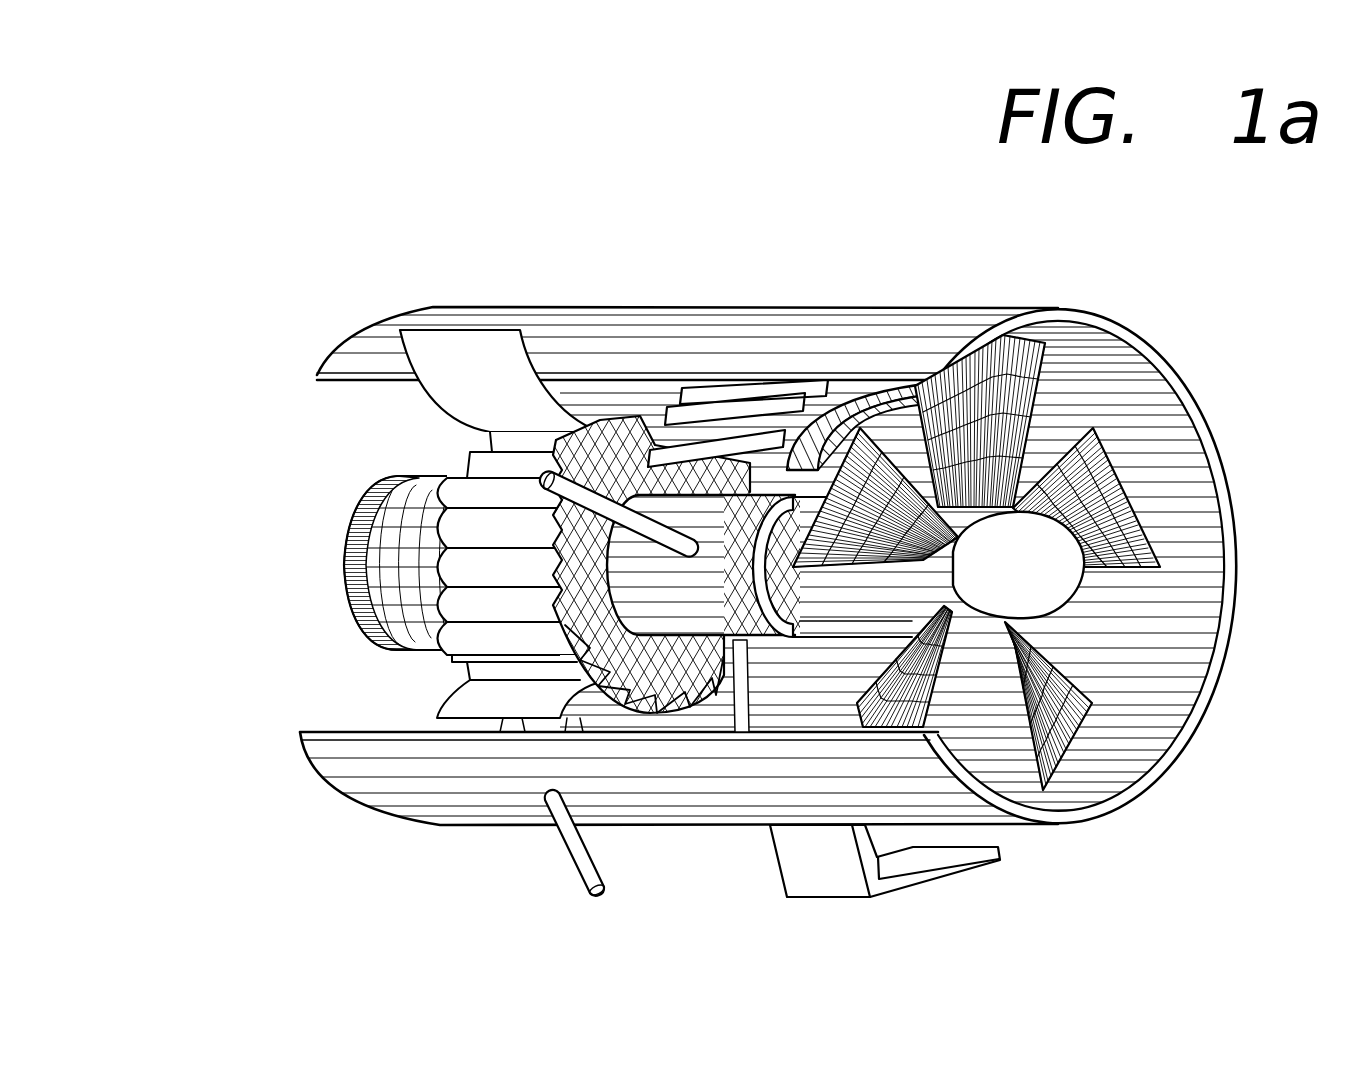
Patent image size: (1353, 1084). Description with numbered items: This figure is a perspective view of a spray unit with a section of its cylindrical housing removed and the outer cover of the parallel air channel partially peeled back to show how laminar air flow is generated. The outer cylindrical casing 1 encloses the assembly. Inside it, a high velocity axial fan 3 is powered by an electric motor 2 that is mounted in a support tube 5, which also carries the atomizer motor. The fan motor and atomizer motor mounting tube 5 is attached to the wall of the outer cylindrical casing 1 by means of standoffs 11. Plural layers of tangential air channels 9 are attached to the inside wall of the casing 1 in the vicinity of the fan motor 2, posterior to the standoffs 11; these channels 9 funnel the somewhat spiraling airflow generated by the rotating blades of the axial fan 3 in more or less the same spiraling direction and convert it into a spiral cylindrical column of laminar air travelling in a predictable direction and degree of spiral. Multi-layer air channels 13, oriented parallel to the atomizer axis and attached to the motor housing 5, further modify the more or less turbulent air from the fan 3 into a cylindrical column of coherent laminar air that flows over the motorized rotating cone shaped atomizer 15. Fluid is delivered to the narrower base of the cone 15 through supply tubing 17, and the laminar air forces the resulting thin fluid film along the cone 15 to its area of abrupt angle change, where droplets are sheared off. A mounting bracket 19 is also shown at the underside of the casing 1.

The outer cylindrical casing 1 is at (504, 307).
The electric motor 2 is at (877, 597).
The axial fan 3 is at (985, 385).
The support tube 5 is at (668, 460).
The tangential air channels 9 is at (747, 385).
The standoffs 11 is at (571, 470).
The multi-layer air channels 13 is at (477, 493).
The cone shaped atomizer 15 is at (353, 553).
The supply tubing 17 is at (597, 900).
The mounting bracket 19 is at (843, 876).